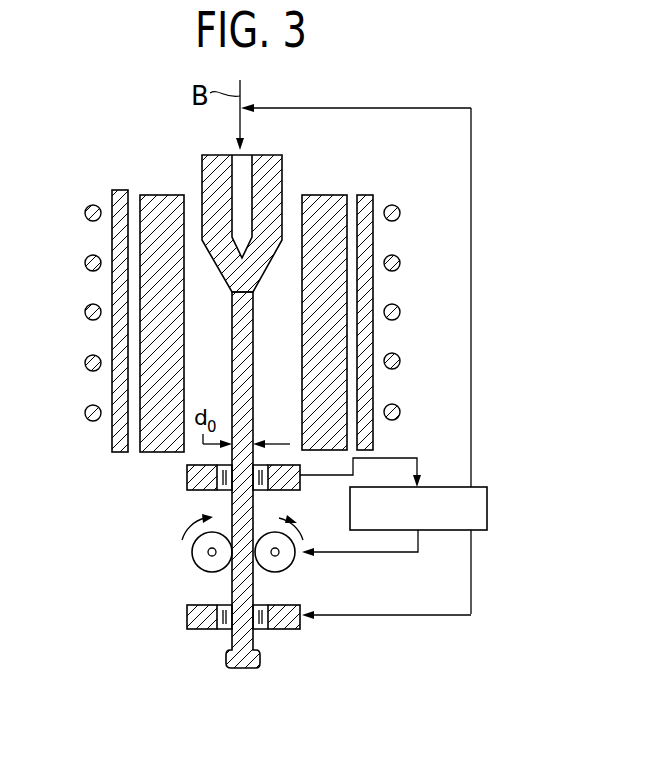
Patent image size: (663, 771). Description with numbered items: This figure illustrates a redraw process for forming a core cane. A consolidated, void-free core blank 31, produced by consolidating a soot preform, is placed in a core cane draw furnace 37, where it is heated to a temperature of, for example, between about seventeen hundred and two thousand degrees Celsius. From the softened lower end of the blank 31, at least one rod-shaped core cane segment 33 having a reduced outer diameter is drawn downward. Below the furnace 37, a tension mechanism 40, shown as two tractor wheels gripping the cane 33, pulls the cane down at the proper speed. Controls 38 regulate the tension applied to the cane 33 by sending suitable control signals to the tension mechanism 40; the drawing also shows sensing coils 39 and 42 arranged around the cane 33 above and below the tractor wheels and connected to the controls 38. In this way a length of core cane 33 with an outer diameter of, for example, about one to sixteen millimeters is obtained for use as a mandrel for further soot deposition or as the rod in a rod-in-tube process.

The consolidated core blank 31 is at (292, 162).
The core cane segment 33 is at (256, 640).
The core cane draw furnace 37 is at (148, 186).
The controls 38 is at (447, 485).
The measuring coil 39 is at (187, 480).
The tension mechanism 40 is at (172, 558).
The measuring coil 42 is at (287, 605).